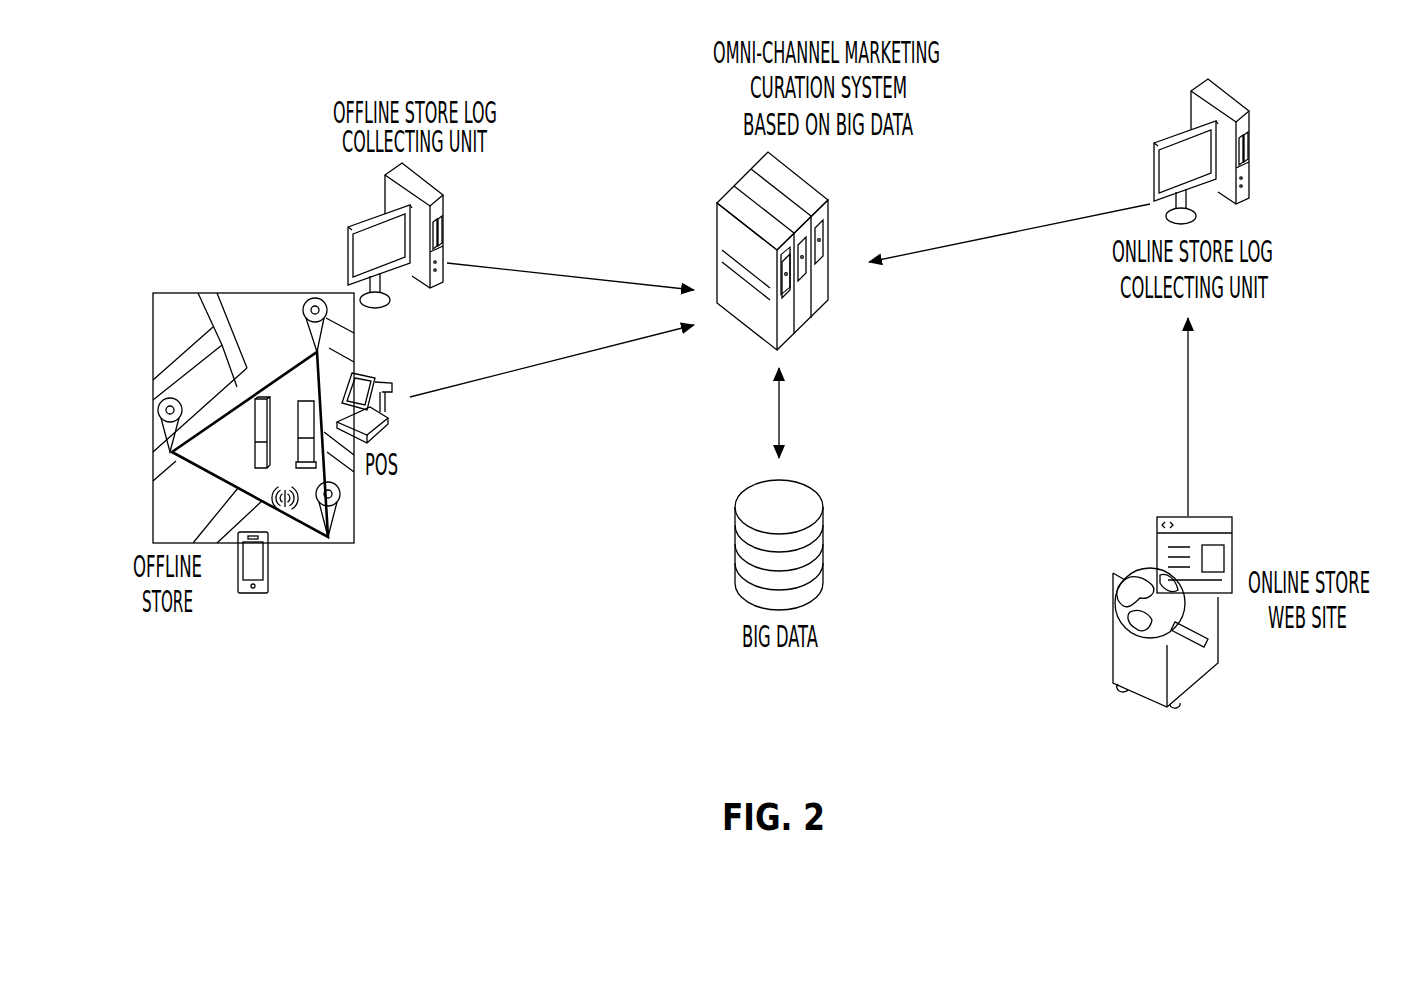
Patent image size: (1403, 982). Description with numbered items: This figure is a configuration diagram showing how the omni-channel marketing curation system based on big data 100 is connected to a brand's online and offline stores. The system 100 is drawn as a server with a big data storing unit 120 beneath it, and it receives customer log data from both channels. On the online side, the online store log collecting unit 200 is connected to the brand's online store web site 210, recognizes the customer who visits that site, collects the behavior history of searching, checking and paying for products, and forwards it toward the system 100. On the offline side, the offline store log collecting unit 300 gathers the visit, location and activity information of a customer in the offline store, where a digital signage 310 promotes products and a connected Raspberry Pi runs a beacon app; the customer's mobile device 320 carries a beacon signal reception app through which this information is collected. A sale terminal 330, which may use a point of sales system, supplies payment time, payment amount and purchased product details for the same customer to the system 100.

The omni-channel marketing curation system based on big data 100 is at (745, 172).
The big data storing unit 120 is at (735, 560).
The online store log collecting unit 200 is at (1240, 100).
The online store web site 210 is at (1220, 648).
The offline store log collecting unit 300 is at (363, 215).
The digital signage 310 is at (263, 410).
The mobile device 320 is at (270, 573).
The sale terminal 330 is at (393, 425).